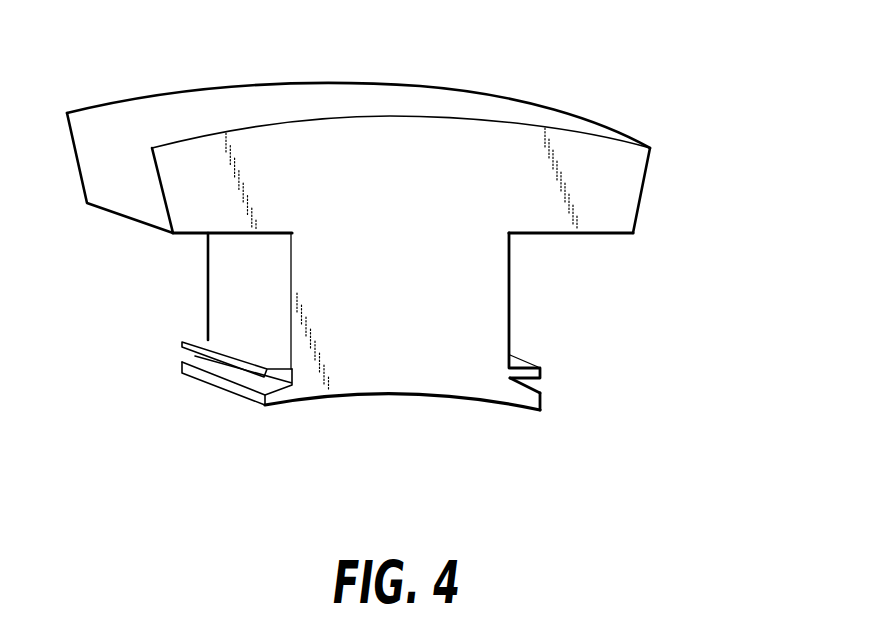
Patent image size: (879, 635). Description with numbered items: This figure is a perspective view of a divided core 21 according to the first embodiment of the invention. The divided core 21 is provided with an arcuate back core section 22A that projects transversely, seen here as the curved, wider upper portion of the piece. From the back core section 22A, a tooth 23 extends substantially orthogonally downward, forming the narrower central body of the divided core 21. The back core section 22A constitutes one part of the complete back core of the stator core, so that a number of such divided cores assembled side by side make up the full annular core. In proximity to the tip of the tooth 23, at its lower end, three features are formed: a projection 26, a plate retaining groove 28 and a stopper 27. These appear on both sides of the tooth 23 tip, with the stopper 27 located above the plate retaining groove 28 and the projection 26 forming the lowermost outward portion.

The divided core 21 is at (420, 62).
The back core section 22A is at (627, 197).
The tooth 23 is at (417, 370).
The projection 26 is at (237, 398).
The stopper 27 is at (182, 343).
The plate retaining groove 28 is at (210, 373).